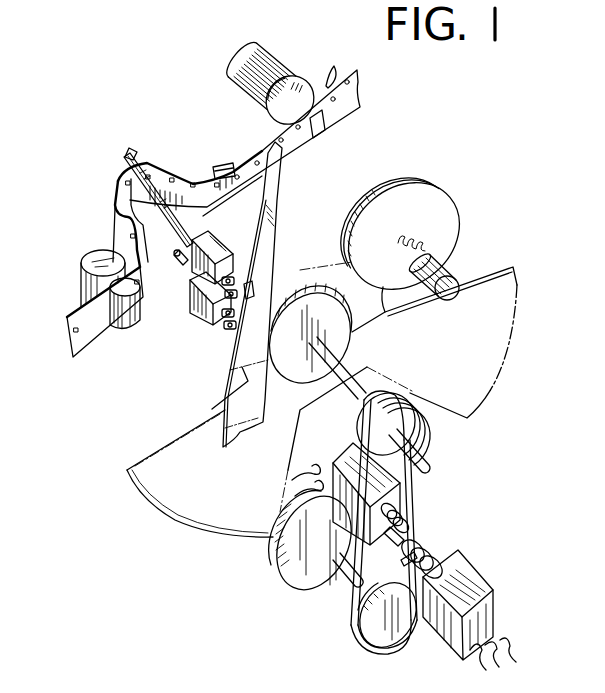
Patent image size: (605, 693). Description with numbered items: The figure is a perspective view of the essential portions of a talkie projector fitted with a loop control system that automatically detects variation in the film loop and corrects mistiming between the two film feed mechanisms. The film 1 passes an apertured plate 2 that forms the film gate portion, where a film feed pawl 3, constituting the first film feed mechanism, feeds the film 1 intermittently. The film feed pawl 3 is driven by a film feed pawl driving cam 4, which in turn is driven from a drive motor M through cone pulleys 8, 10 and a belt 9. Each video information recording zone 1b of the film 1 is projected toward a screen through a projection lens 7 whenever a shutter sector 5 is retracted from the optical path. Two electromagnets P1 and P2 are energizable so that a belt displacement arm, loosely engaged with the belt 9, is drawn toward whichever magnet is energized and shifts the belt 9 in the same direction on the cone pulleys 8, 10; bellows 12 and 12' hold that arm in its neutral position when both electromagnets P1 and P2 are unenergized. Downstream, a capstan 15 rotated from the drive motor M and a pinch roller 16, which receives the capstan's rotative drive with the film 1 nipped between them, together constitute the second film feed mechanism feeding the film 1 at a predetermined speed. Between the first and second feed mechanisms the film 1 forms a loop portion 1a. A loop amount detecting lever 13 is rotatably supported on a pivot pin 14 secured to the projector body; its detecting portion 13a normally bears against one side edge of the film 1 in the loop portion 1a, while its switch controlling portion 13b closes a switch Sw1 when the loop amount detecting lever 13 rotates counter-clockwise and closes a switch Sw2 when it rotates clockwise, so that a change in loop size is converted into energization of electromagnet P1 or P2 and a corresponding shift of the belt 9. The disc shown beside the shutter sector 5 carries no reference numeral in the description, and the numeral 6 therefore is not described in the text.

The film 1 is at (186, 194).
The loop portion 1a is at (122, 170).
The video information recording zone 1b is at (318, 127).
The apertured plate 2 is at (222, 164).
The film feed pawl 3 is at (272, 203).
The film feed pawl driving cam 4 is at (340, 332).
The shutter sector 5 is at (495, 292).
The rotary disc 6 is at (421, 202).
The projection lens 7 is at (297, 92).
The cone pulley 8 is at (378, 640).
The belt 9 is at (415, 497).
The cone pulley 10 is at (386, 400).
The bellows 12 is at (417, 523).
The bellows 12' is at (446, 555).
The loop amount detecting lever 13 is at (174, 256).
The detecting portion 13a is at (143, 150).
The switch controlling portion 13b is at (250, 298).
The pivot pin 14 is at (180, 266).
The capstan 15 is at (125, 331).
The pinch roller 16 is at (102, 251).
The switch Sw1 is at (217, 252).
The switch Sw2 is at (202, 307).
The electromagnet P1 is at (350, 456).
The electromagnet P2 is at (478, 572).
The drive motor M is at (290, 563).